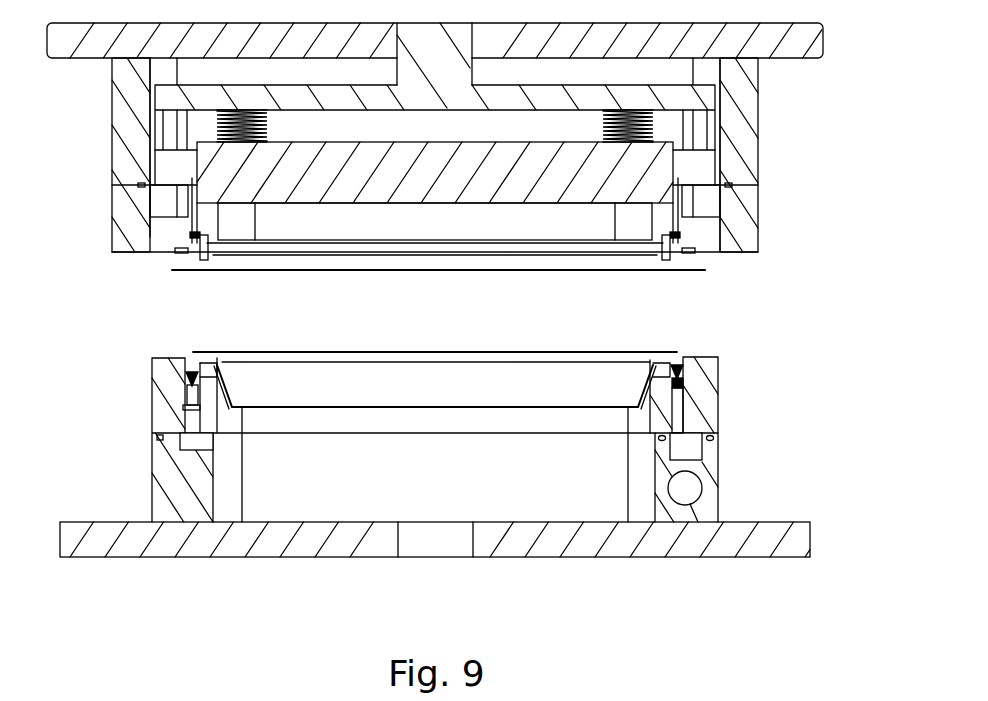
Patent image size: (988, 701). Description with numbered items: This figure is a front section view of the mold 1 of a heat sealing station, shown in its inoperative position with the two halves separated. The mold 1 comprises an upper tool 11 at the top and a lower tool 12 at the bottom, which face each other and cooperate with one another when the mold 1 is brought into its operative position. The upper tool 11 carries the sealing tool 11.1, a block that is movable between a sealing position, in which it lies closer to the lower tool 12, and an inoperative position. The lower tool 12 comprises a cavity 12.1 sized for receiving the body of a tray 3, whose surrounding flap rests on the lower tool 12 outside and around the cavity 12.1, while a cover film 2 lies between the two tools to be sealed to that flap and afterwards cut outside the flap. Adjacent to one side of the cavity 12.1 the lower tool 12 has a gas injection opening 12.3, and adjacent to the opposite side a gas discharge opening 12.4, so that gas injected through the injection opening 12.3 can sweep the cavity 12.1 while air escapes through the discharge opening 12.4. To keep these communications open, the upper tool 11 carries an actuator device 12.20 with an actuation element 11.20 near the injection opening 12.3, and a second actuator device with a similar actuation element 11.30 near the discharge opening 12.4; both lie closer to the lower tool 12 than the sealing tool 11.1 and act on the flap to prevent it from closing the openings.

The mold 1 is at (74, 169).
The cover film 2 is at (287, 272).
The tray 3 is at (272, 408).
The upper tool 11 is at (827, 15).
The sealing tool 11.1 is at (371, 190).
The actuation element 11.20 is at (697, 253).
The actuation element 11.30 is at (188, 246).
The lower tool 12 is at (827, 347).
The cavity 12.1 is at (227, 413).
The actuator device 12.20 is at (435, 249).
The gas injection opening 12.3 is at (683, 349).
The gas discharge opening 12.4 is at (192, 372).